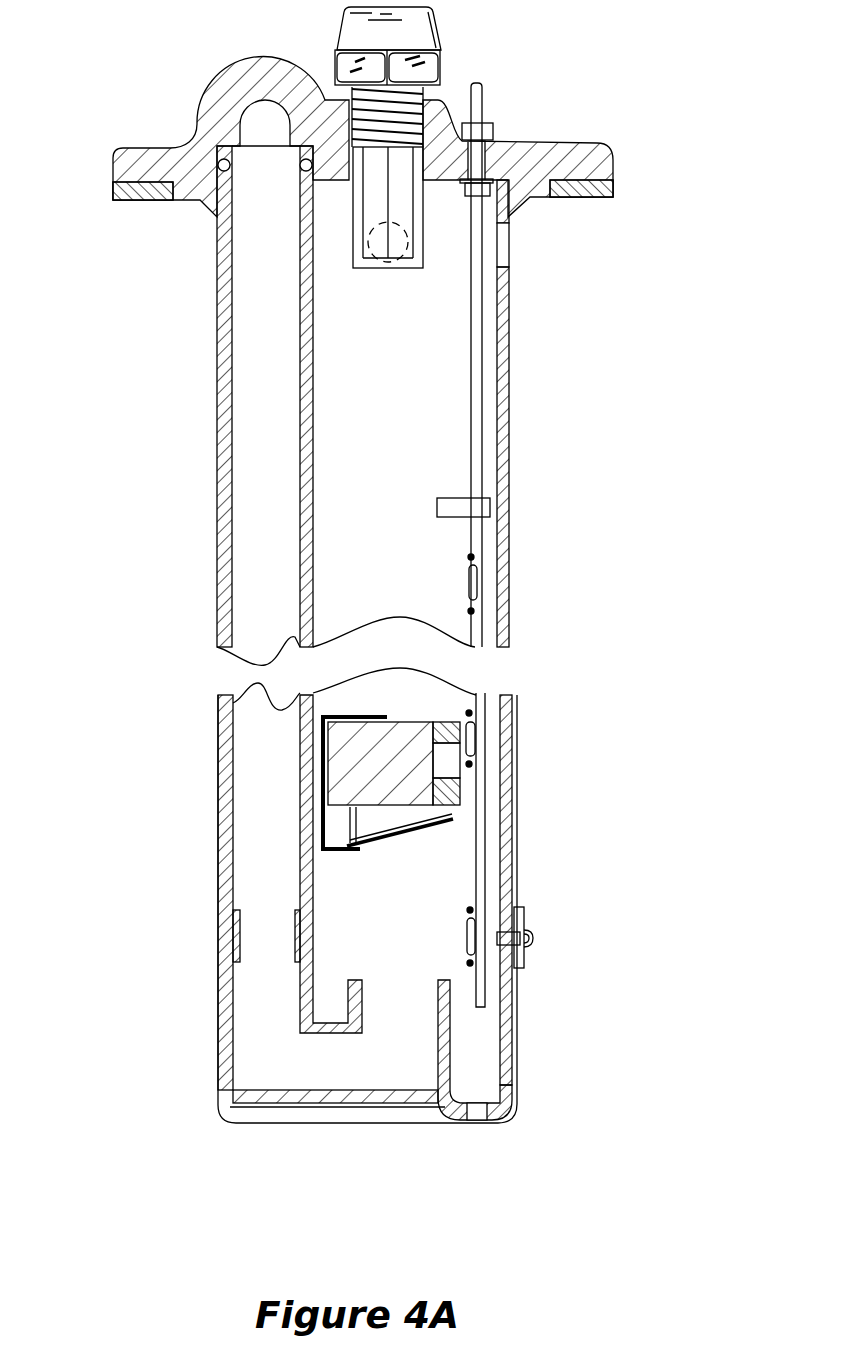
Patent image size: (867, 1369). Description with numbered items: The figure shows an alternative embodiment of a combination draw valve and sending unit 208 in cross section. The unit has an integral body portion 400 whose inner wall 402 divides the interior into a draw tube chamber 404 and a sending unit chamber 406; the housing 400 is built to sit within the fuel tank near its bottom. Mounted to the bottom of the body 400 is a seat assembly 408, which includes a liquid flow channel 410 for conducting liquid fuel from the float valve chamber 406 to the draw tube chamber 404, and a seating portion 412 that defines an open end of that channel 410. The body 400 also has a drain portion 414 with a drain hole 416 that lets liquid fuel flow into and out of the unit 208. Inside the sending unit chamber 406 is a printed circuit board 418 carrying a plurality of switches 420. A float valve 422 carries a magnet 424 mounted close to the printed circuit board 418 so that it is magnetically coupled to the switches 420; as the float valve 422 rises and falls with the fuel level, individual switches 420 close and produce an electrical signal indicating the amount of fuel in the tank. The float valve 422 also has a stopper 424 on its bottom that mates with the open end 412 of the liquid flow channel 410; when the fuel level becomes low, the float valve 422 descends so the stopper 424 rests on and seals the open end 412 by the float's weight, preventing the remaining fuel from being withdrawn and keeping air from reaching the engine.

The combination draw valve and sending unit 208 is at (682, 276).
The integral body portion 400 is at (217, 432).
The inner wall 402 is at (315, 368).
The draw tube chamber 404 is at (288, 426).
The sending unit chamber 406 is at (418, 436).
The seat assembly 408 is at (515, 1055).
The liquid flow channel 410 is at (353, 1075).
The seating portion 412 is at (450, 1008).
The drain portion 414 is at (515, 1000).
The drain hole 416 is at (503, 1113).
The printed circuit board 418 is at (486, 847).
The switches 420 is at (477, 588).
The float valve 422 is at (345, 776).
The magnet 424 is at (455, 793).